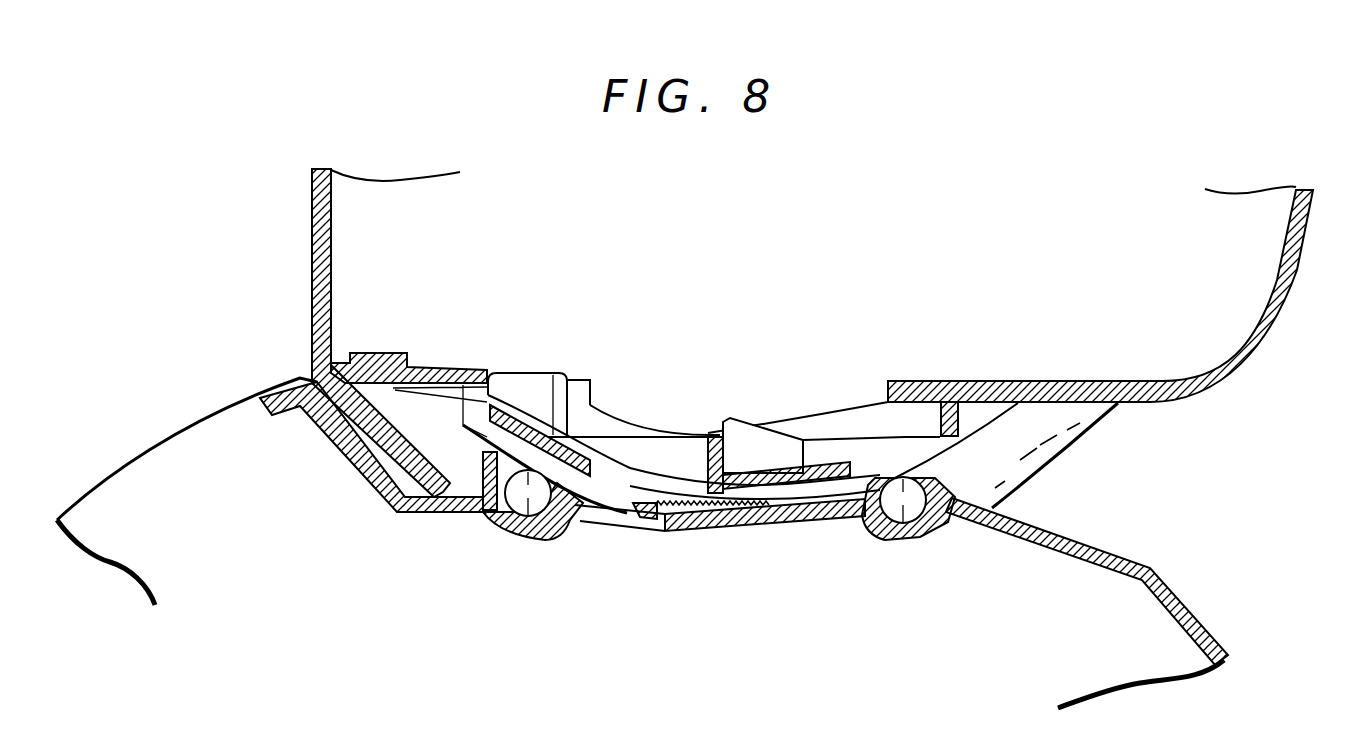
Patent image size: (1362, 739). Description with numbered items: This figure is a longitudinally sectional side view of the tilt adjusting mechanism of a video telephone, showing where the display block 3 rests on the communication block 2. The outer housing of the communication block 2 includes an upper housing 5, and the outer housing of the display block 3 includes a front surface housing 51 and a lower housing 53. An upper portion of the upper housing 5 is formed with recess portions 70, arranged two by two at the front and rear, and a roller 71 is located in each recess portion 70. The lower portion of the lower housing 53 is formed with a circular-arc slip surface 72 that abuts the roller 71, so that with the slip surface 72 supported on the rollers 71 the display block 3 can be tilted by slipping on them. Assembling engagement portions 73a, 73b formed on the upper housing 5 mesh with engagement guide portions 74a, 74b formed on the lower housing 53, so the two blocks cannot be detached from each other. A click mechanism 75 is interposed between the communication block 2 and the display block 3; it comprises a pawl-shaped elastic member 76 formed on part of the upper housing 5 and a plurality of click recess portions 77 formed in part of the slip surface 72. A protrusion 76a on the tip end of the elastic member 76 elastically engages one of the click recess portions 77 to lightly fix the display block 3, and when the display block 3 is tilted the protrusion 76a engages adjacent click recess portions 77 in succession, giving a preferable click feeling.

The communication block 2 is at (160, 428).
The display block 3 is at (300, 248).
The upper housing 5 is at (1148, 565).
The front surface housing 51 is at (323, 323).
The lower housing 53 is at (1255, 345).
The recess portions 70 is at (532, 537).
The roller 71 is at (510, 525).
The circular-arc slip surface 72 is at (795, 532).
The assembling engagement portion 73a is at (527, 400).
The assembling engagement portion 73b is at (755, 455).
The engagement guide portion 74a is at (578, 462).
The engagement guide portion 74b is at (822, 468).
The click mechanism 75 is at (645, 550).
The pawl-shaped elastic member 76 is at (613, 508).
The protrusion 76a is at (648, 498).
The click recess portions 77 is at (692, 535).